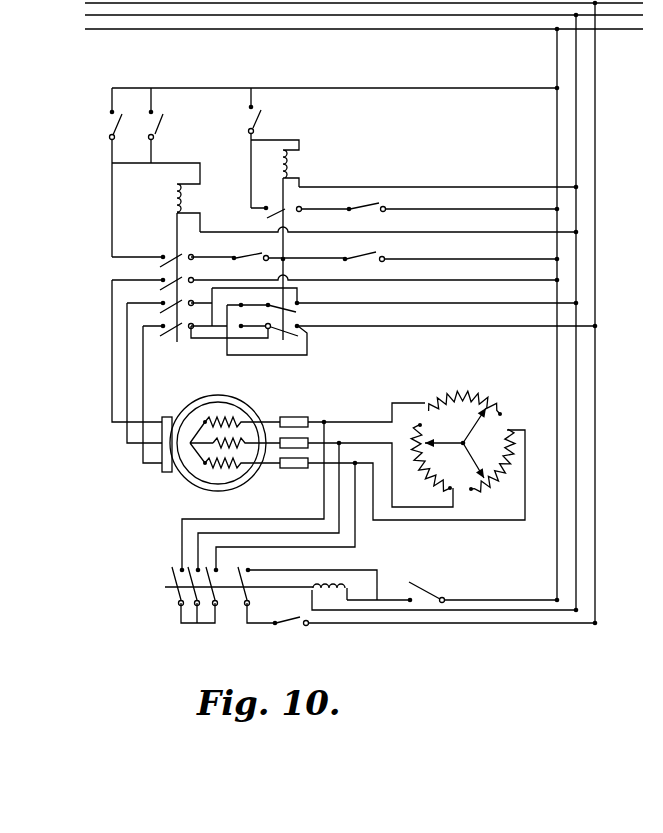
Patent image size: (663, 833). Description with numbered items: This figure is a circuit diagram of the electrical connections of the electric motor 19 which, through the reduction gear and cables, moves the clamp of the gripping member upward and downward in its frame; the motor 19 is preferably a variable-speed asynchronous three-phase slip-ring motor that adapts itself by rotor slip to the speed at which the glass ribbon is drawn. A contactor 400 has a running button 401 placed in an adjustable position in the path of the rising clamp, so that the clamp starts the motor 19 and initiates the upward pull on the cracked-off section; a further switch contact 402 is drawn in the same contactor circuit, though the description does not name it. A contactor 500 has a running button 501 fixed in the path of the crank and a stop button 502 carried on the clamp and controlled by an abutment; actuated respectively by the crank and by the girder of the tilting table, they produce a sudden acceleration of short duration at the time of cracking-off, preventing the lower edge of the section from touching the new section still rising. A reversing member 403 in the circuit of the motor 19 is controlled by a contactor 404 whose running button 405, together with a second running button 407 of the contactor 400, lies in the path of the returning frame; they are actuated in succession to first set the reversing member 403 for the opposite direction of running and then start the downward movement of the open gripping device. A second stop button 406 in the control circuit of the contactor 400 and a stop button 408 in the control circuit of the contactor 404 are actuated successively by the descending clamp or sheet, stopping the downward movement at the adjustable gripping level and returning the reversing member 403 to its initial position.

The electric motor 19 is at (252, 413).
The contactor 400 is at (176, 179).
The running button 401 is at (110, 122).
The switch contact 402 is at (247, 255).
The reversing member 403 is at (285, 320).
The contactor 404 is at (284, 222).
The running button 405 is at (258, 112).
The second stop button 406 is at (363, 252).
The second running button 407 is at (168, 132).
The stop button 408 is at (364, 206).
The contactor 500 is at (260, 585).
The running button 501 is at (428, 583).
The stop button 502 is at (299, 618).